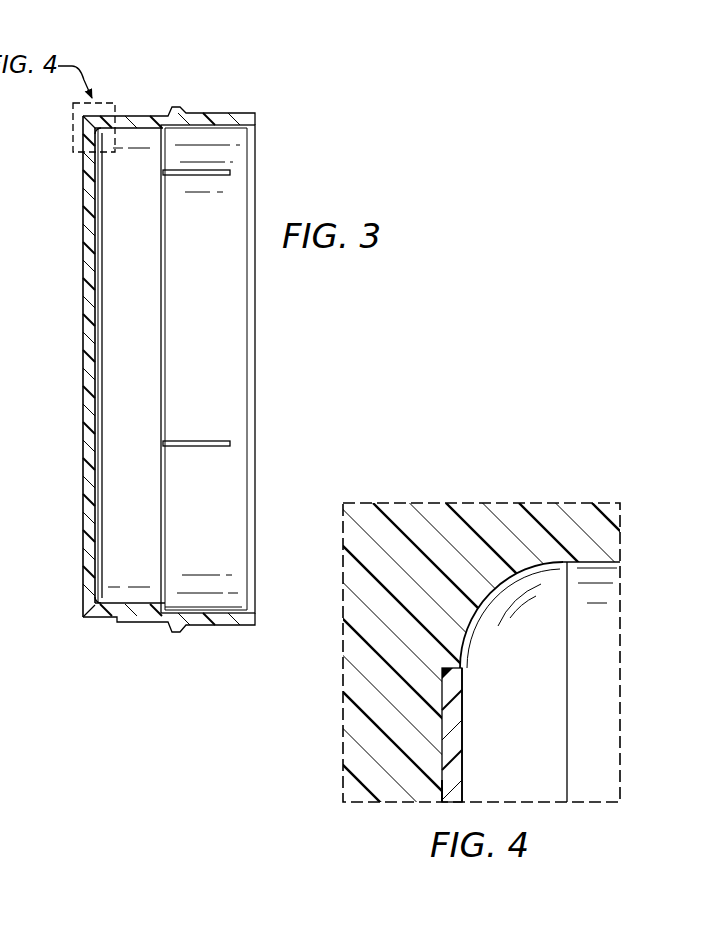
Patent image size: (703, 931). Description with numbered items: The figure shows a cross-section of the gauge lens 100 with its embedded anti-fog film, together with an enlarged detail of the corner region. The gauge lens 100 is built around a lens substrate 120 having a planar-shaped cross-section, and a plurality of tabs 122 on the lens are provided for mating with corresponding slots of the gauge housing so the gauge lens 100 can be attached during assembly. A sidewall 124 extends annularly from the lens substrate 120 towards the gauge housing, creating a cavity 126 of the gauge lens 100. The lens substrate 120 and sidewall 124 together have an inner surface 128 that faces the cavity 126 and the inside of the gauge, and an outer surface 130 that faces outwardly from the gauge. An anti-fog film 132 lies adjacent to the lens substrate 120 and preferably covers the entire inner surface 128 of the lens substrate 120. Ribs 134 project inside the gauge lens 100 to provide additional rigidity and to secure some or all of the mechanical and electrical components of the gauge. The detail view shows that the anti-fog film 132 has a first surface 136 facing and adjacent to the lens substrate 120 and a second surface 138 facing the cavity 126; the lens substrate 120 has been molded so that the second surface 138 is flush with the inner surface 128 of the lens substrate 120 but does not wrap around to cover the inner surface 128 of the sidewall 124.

In FIG. 3, the gauge lens 100 is at (236, 84).
In FIG. 3, the lens substrate 120 is at (85, 215).
In FIG. 4, the lens substrate 120 is at (416, 742).
In FIG. 3, the tabs 122 is at (10, 384).
In FIG. 3, the sidewall 124 is at (142, 114).
In FIG. 4, the sidewall 124 is at (458, 560).
In FIG. 3, the cavity 126 is at (234, 331).
In FIG. 4, the cavity 126 is at (604, 703).
In FIG. 3, the inner surface 128 is at (127, 137).
In FIG. 4, the inner surface 128 is at (463, 646).
In FIG. 3, the outer surface 130 is at (83, 527).
In FIG. 3, the anti-fog film 132 is at (104, 238).
In FIG. 4, the anti-fog film 132 is at (455, 722).
In FIG. 3, the ribs 134 is at (193, 178).
In FIG. 4, the first surface 136 is at (440, 775).
In FIG. 4, the second surface 138 is at (462, 750).